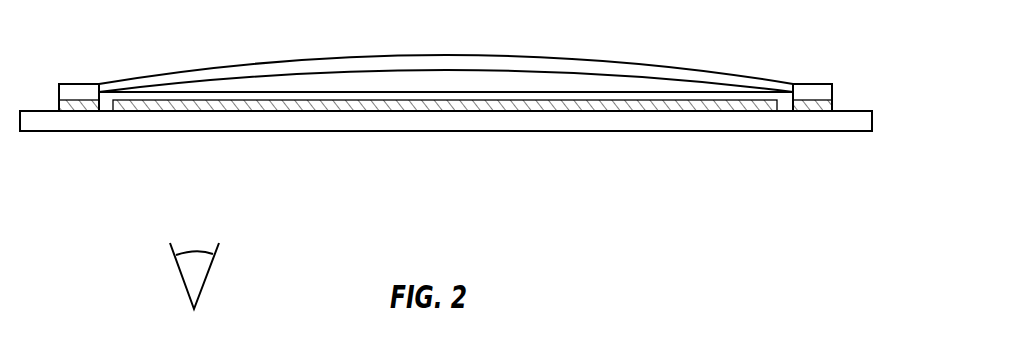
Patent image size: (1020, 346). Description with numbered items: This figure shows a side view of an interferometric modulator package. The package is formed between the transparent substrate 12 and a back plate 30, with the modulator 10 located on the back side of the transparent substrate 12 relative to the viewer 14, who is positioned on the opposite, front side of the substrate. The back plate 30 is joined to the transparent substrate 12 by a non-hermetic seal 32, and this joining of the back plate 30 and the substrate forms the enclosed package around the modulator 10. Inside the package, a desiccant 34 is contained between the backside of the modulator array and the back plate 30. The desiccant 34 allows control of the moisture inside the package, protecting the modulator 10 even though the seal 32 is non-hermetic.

The modulator 10 is at (611, 114).
The transparent substrate 12 is at (173, 132).
The viewer 14 is at (182, 275).
The back plate 30 is at (338, 56).
The non-hermetic seal 32 is at (833, 100).
The desiccant 34 is at (557, 80).